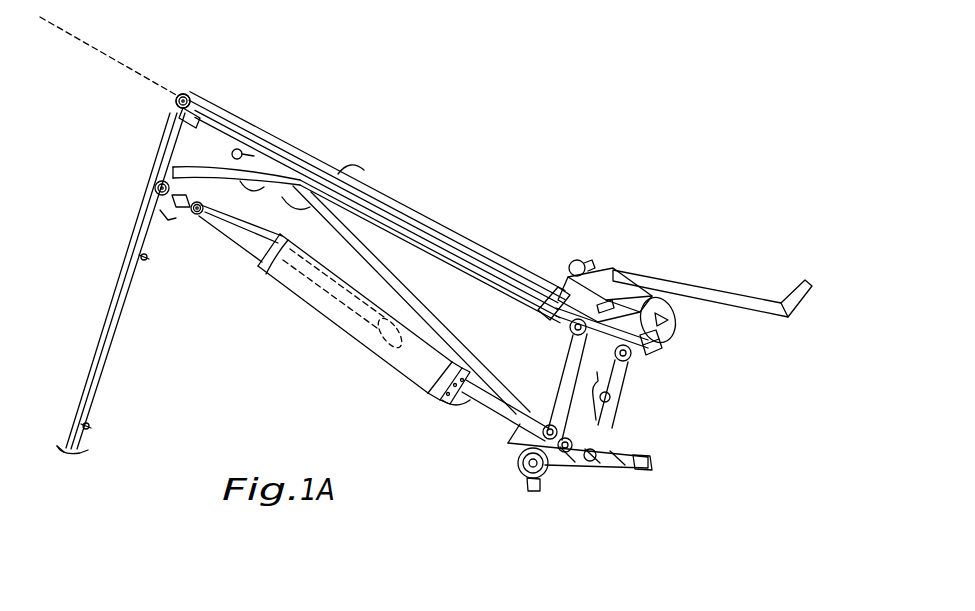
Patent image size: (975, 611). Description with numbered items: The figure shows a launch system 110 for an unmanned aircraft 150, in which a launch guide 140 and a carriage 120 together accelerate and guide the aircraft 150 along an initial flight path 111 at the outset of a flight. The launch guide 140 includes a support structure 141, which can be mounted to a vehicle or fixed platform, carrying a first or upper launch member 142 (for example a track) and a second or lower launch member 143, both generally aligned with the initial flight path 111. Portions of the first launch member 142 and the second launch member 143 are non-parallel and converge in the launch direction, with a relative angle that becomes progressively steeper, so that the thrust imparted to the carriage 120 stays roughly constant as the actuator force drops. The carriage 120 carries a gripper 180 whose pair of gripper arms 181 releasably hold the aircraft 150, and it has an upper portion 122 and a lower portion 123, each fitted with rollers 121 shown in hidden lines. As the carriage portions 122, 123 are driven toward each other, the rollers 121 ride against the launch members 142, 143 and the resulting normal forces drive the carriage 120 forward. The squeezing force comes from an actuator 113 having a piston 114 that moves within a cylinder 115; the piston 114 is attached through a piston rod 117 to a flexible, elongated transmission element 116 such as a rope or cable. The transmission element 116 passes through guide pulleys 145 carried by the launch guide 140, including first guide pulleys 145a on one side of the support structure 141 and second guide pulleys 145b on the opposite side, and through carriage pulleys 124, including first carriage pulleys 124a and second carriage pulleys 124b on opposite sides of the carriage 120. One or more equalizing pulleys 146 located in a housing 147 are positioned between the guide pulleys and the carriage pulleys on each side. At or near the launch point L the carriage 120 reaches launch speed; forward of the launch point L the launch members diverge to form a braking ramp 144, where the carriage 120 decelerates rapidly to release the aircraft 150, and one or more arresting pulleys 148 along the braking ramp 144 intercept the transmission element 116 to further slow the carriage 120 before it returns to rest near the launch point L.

The launch system 110 is at (493, 124).
The initial flight path 111 is at (78, 38).
The actuator 113 is at (333, 337).
The piston 114 is at (393, 358).
The cylinder 115 is at (287, 300).
The transmission element 116 is at (238, 122).
The piston rod 117 is at (233, 240).
The carriage 120 is at (550, 265).
The rollers 121 is at (633, 357).
The upper portion 122 is at (557, 363).
The lower portion 123 is at (573, 421).
The carriage pulleys 124 is at (525, 475).
The first carriage pulleys 124a is at (575, 330).
The second carriage pulleys 124b is at (590, 463).
The launch guide 140 is at (70, 134).
The support structure 141 is at (72, 362).
The first launch member 142 is at (383, 207).
The second launch member 143 is at (375, 268).
The braking ramp 144 is at (282, 197).
The guide pulleys 145 is at (133, 212).
The first guide pulleys 145a is at (177, 103).
The second guide pulleys 145b is at (187, 94).
The equalizing pulleys 146 is at (650, 360).
The housing 147 is at (645, 358).
The arresting pulleys 148 is at (243, 156).
The aircraft 150 is at (597, 273).
The gripper 180 is at (630, 297).
The gripper arms 181 is at (613, 283).
The launch point L is at (342, 188).